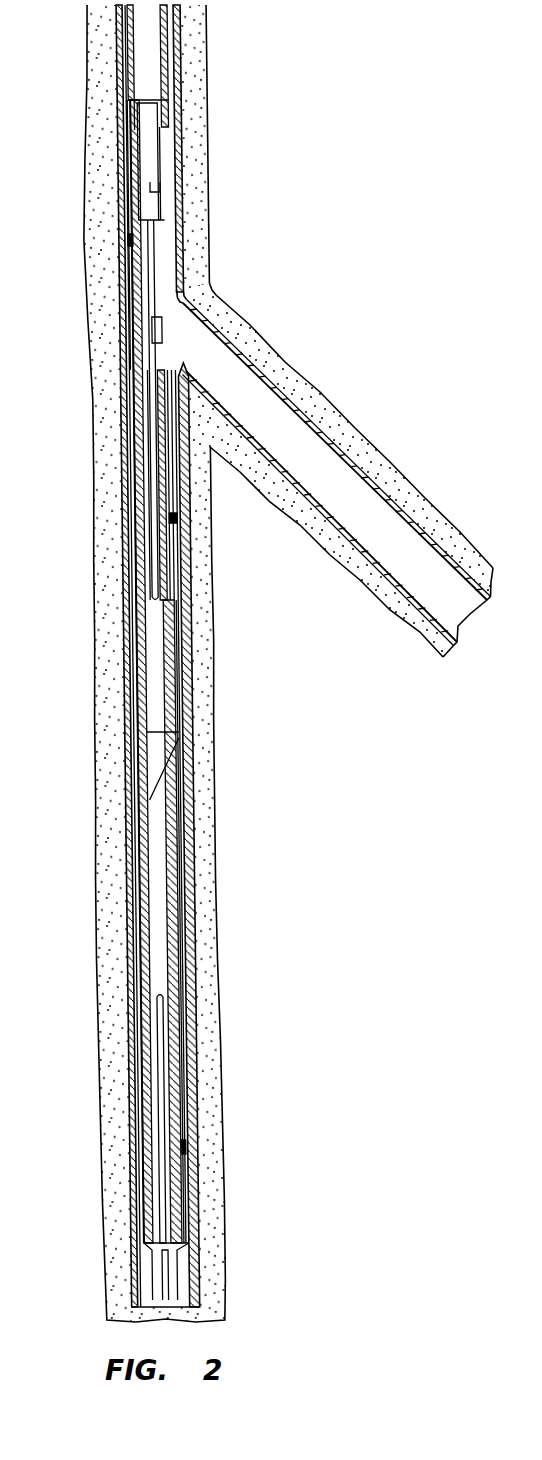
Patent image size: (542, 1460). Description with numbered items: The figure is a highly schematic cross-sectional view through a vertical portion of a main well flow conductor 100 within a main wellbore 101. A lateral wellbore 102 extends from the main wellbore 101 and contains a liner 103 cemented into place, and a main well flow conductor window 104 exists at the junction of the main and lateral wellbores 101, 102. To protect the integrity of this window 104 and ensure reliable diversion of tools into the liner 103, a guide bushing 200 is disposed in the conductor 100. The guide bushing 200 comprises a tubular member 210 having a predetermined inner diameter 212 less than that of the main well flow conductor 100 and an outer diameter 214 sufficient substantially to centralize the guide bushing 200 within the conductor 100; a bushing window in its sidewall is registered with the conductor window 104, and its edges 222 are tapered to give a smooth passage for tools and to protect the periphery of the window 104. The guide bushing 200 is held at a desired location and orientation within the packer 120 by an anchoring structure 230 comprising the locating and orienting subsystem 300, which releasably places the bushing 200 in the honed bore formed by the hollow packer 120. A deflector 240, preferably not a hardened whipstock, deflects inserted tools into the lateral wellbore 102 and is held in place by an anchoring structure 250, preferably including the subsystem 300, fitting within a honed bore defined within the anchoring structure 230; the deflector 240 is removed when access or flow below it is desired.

The main well flow conductor 100 is at (130, 912).
The main wellbore 101 is at (110, 985).
The lateral wellbore 102 is at (362, 445).
The liner 103 is at (318, 400).
The main well flow conductor window 104 is at (196, 300).
The packer 120 is at (150, 1231).
The guide bushing 200 is at (148, 160).
The tubular member 210 is at (137, 220).
The inner diameter 212 is at (152, 190).
The outer diameter 214 is at (130, 150).
The edges of the bushing window 222 is at (128, 240).
The anchoring structure 230 is at (170, 1207).
The deflector 240 is at (122, 324).
The anchoring structure 250 is at (157, 563).
The locating and orienting subsystem 300 is at (172, 515).